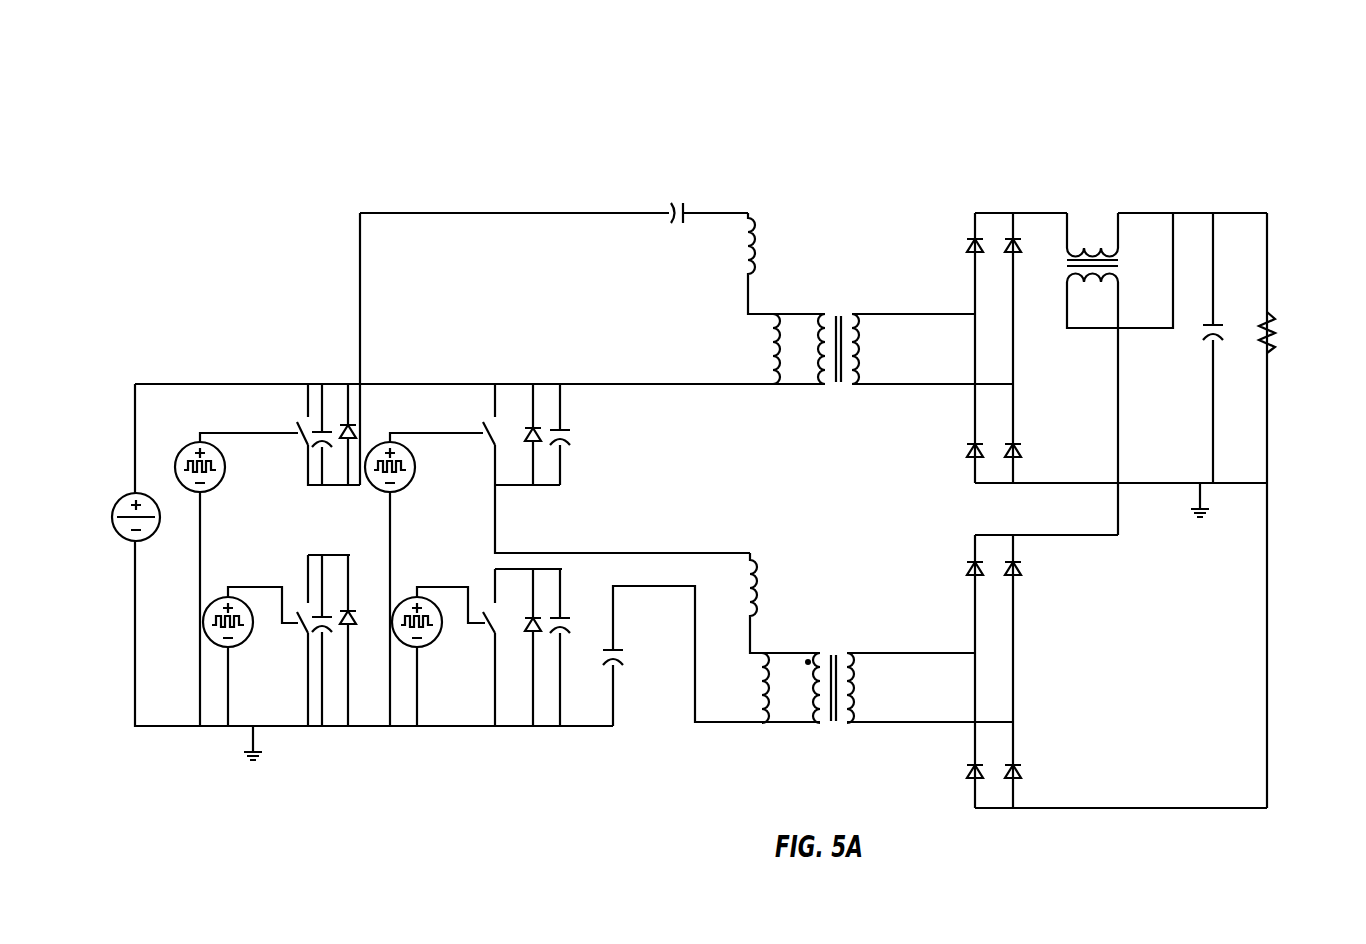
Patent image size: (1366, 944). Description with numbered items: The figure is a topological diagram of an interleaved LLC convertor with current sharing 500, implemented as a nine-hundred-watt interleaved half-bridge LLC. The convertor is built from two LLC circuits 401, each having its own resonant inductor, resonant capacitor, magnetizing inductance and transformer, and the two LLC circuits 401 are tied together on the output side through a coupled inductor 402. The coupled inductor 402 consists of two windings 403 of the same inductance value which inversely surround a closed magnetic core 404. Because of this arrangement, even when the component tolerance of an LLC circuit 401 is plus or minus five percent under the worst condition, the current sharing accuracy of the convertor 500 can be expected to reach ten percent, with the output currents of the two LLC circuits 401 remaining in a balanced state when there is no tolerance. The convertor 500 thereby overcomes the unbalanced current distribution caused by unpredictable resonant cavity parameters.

The interleaved LLC convertor with current sharing 500 is at (418, 63).
The LLC circuit 401 is at (1303, 808).
The coupled inductor 402 is at (1067, 262).
The windings 403 is at (1093, 262).
The closed magnetic core 404 is at (1120, 267).